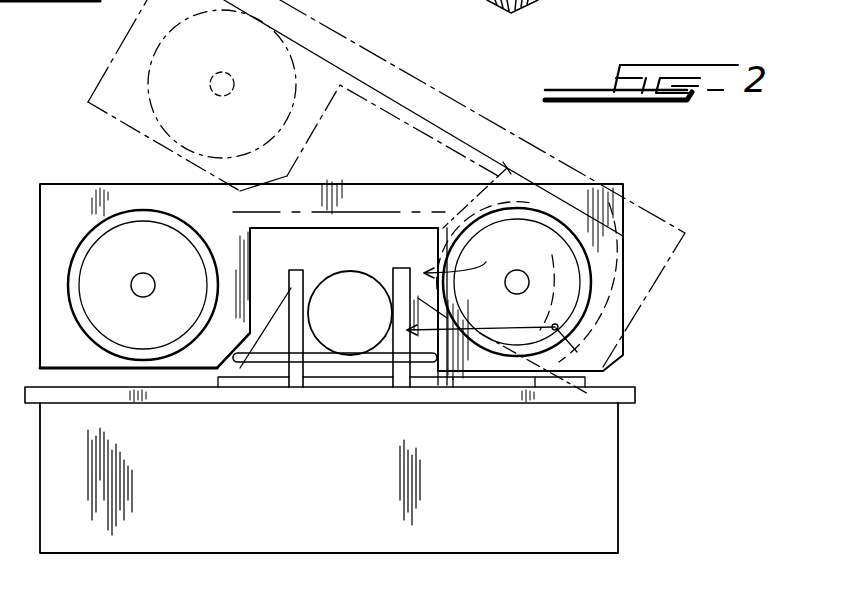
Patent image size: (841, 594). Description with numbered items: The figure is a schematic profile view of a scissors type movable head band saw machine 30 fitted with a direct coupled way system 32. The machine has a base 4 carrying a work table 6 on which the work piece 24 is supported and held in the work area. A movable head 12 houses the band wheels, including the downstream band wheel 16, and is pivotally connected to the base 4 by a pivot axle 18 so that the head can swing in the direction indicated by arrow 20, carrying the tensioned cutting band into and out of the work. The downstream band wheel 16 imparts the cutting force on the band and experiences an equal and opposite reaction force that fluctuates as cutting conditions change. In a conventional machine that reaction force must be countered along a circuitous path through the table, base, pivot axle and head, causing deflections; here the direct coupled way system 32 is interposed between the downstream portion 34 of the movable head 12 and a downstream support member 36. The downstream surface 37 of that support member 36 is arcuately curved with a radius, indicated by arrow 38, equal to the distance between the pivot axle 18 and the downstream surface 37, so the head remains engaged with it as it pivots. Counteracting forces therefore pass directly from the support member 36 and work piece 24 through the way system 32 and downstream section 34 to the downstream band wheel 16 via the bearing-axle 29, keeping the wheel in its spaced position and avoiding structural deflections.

The base 4 is at (612, 453).
The work table 6 is at (636, 395).
The movable head 12 is at (89, 184).
The downstream band wheel 16 is at (560, 250).
The pivot axle 18 is at (579, 349).
The arrow indicating direction of pivotal movement 20 is at (140, 0).
The work piece 24 is at (343, 292).
The bearing-axle 29 is at (521, 272).
The scissors type movable head band saw machine 30 is at (678, 218).
The direct coupled way system 32 is at (466, 262).
The downstream portion of movable head 34 is at (607, 292).
The downstream support member 36 is at (402, 275).
The downstream surface 37 is at (433, 358).
The arrow indicating radius 38 is at (497, 330).